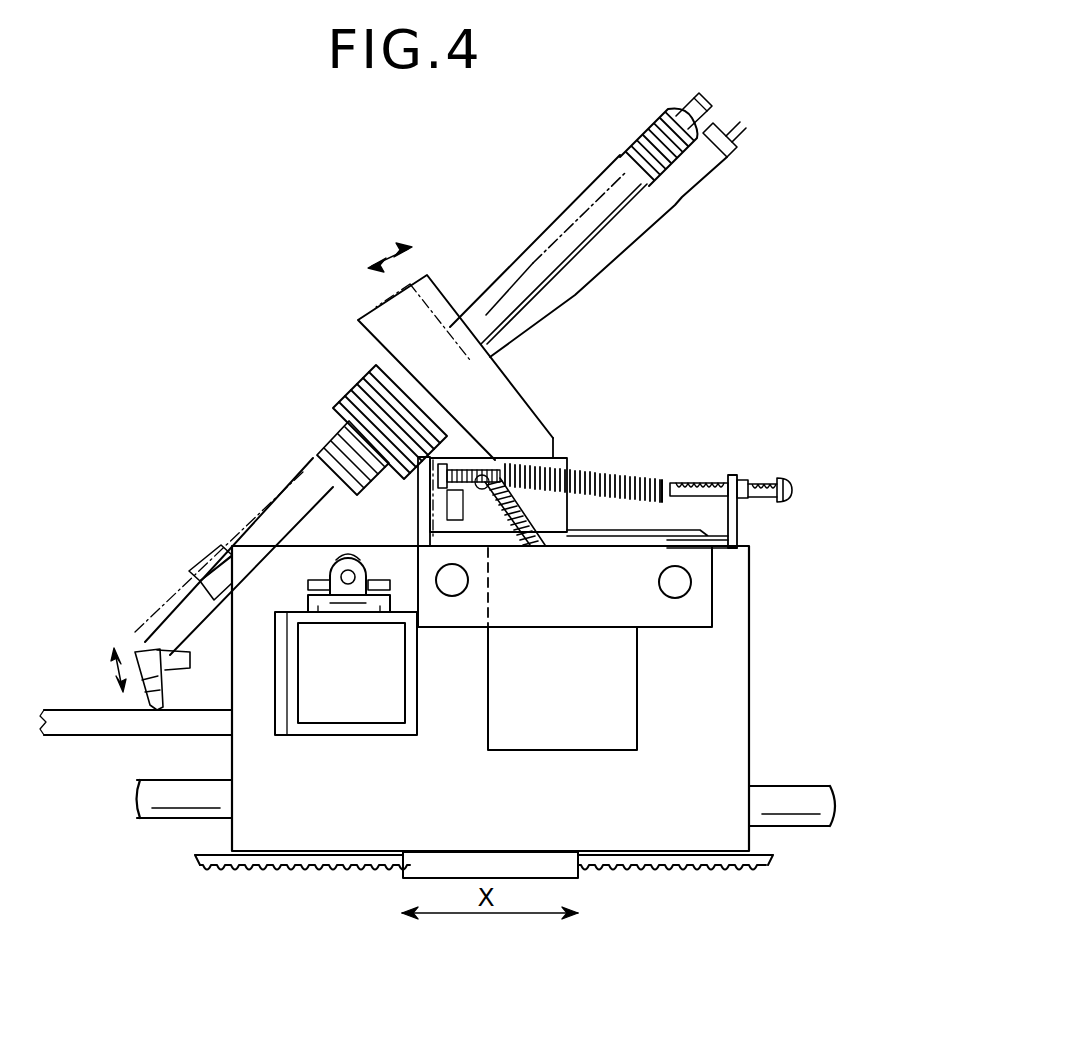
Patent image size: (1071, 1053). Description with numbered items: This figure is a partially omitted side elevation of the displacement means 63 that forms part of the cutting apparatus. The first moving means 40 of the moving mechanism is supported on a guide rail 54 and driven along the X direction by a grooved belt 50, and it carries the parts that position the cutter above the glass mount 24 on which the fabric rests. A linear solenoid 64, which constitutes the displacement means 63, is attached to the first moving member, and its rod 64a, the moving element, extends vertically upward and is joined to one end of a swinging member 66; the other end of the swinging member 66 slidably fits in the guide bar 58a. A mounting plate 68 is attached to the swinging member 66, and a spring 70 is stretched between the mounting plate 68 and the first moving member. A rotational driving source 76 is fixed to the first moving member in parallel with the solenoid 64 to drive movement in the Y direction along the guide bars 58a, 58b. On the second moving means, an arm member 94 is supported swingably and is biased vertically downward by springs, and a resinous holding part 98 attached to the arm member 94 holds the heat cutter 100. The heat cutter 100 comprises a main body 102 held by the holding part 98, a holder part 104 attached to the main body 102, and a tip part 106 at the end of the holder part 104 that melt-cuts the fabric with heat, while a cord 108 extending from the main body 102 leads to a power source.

The mount 24 is at (68, 722).
The first moving means 40 is at (758, 618).
The grooved belt 50 is at (290, 866).
The guide rail 54 is at (150, 791).
The guide bar 58a is at (456, 576).
The guide bar 58b is at (675, 586).
The displacement means 63 is at (340, 709).
The linear solenoid 64 is at (374, 714).
The rod 64a is at (348, 601).
The swinging member 66 is at (445, 630).
The mounting plate 68 is at (418, 507).
The spring 70 is at (612, 477).
The rotational driving source 76 is at (630, 706).
The arm member 94 is at (555, 457).
The holding part 98 is at (505, 414).
The heat cutter 100 is at (480, 289).
The main body 102 is at (562, 226).
The holder part 104 is at (333, 440).
The tip part 106 is at (163, 690).
The cord 108 is at (697, 96).